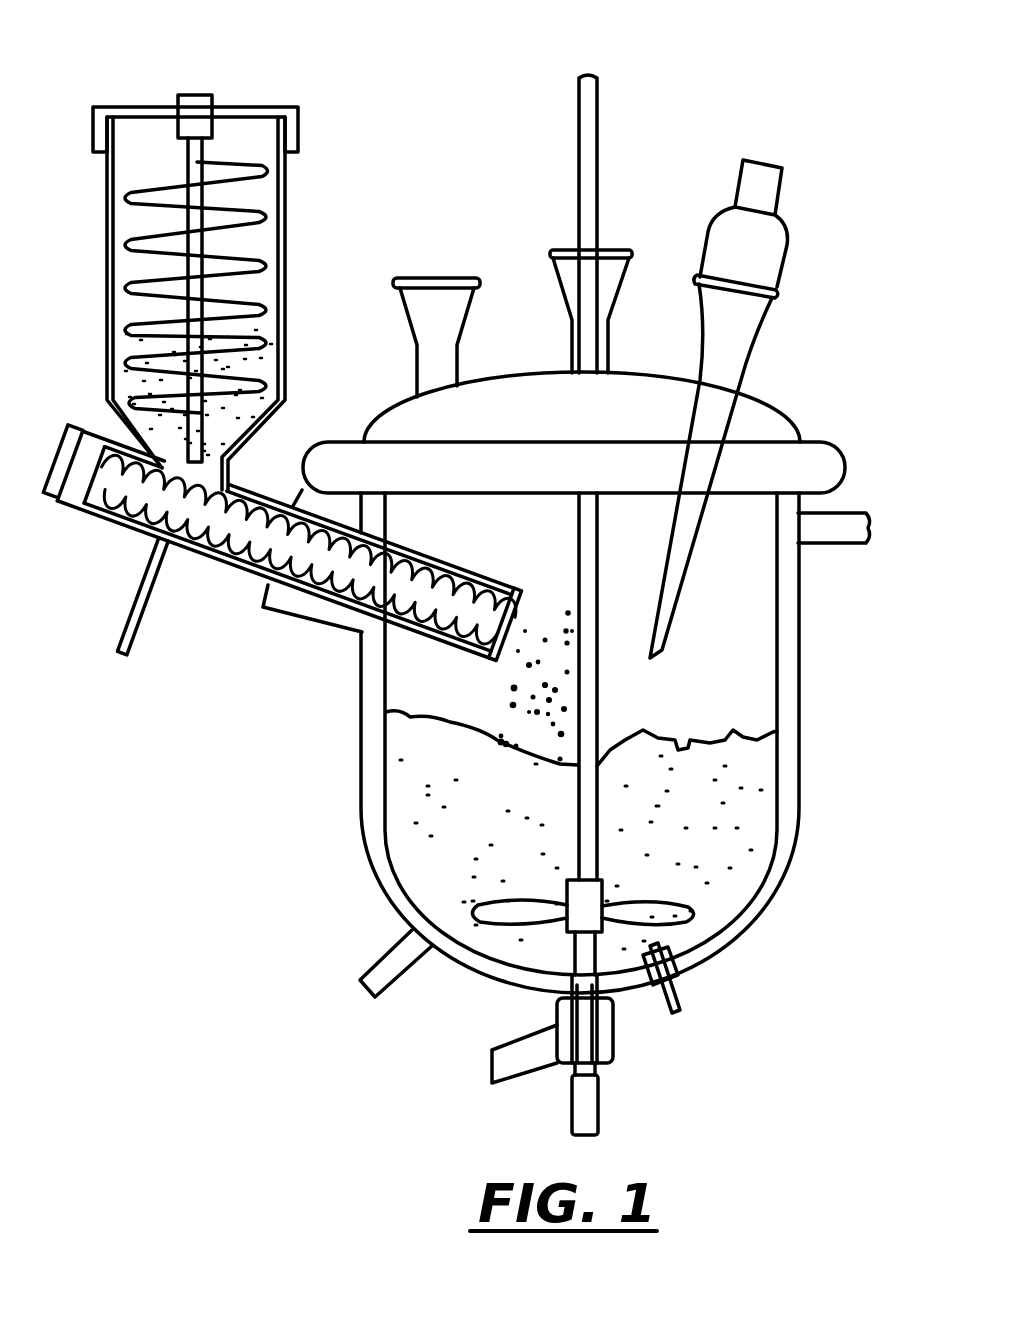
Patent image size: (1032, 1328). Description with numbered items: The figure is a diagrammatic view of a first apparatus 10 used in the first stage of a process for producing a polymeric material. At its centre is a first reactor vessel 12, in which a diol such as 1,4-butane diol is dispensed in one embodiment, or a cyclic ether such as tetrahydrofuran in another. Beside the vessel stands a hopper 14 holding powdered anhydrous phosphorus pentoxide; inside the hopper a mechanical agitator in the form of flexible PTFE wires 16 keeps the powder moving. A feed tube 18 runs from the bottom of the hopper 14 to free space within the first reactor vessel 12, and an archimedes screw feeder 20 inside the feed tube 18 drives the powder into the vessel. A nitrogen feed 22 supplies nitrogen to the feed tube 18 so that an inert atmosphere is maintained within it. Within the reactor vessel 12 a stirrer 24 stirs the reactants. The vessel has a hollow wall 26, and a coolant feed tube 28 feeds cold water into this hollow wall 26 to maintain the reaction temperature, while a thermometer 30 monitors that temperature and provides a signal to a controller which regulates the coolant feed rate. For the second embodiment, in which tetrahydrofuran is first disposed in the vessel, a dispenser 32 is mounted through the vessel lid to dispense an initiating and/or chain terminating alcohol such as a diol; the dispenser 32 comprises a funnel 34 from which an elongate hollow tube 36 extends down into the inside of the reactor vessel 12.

The first apparatus 10 is at (757, 98).
The first reactor vessel 12 is at (787, 640).
The hopper 14 is at (285, 204).
The flexible PTFE wires 16 is at (270, 285).
The feed tube 18 is at (215, 560).
The archimedes screw feeder 20 is at (313, 555).
The nitrogen feed 22 is at (138, 597).
The stirrer 24 is at (685, 918).
The hollow wall 26 is at (785, 780).
The coolant feed tube 28 is at (368, 972).
The thermometer 30 is at (680, 992).
The dispenser 32 is at (772, 409).
The funnel 34 is at (757, 203).
The elongate hollow tube 36 is at (673, 586).